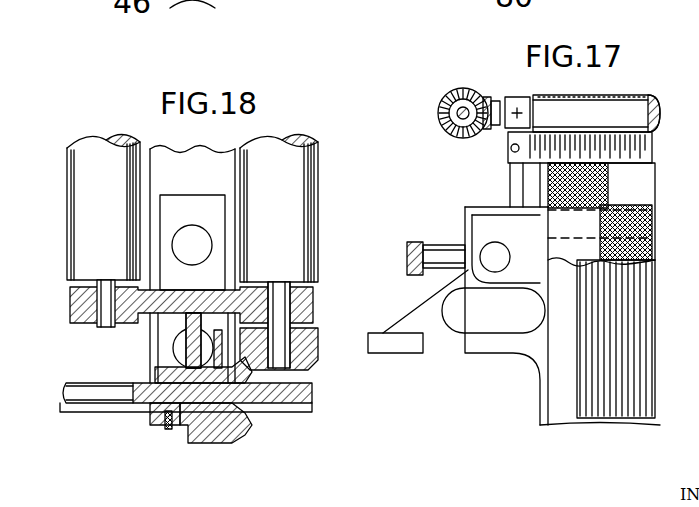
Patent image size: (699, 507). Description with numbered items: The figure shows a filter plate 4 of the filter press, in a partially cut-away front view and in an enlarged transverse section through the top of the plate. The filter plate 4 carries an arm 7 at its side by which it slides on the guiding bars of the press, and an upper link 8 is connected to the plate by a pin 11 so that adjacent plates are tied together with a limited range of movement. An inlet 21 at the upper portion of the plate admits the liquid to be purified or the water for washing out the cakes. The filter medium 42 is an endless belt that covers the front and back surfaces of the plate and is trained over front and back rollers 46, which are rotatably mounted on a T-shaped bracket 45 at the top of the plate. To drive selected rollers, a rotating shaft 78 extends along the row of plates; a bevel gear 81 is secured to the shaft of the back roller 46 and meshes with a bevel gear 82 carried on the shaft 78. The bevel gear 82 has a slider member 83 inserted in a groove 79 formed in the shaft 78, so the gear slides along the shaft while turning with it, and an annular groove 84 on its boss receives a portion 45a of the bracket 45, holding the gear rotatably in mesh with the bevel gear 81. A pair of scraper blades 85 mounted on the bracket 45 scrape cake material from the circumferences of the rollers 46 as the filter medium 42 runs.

In FIG. 18, the filter plate 4 is at (218, 146).
In FIG. 17, the filter plate 4 is at (560, 368).
In FIG. 17, the arm 7 is at (399, 354).
In FIG. 17, the upper link 8 is at (407, 243).
In FIG. 17, the pin 11 is at (442, 250).
In FIG. 17, the inlet 21 is at (510, 258).
In FIG. 17, the filter medium 42 is at (588, 95).
In FIG. 18, the T-shaped bracket 45 is at (70, 312).
In FIG. 17, the T-shaped bracket 45 is at (508, 97).
In FIG. 18, the portion of the bracket 45a is at (190, 336).
In FIG. 18, the roller 46 is at (80, 178).
In FIG. 17, the roller 46 is at (625, 450).
In FIG. 18, the rotating shaft 78 is at (312, 393).
In FIG. 18, the groove 79 is at (300, 410).
In FIG. 18, the bevel gear 81 is at (316, 345).
In FIG. 17, the bevel gear 81 is at (492, 96).
In FIG. 18, the bevel gear 82 is at (236, 436).
In FIG. 17, the bevel gear 82 is at (445, 101).
In FIG. 18, the slider member 83 is at (155, 415).
In FIG. 18, the annular groove 84 is at (182, 426).
In FIG. 17, the scraper blade 85 is at (537, 152).